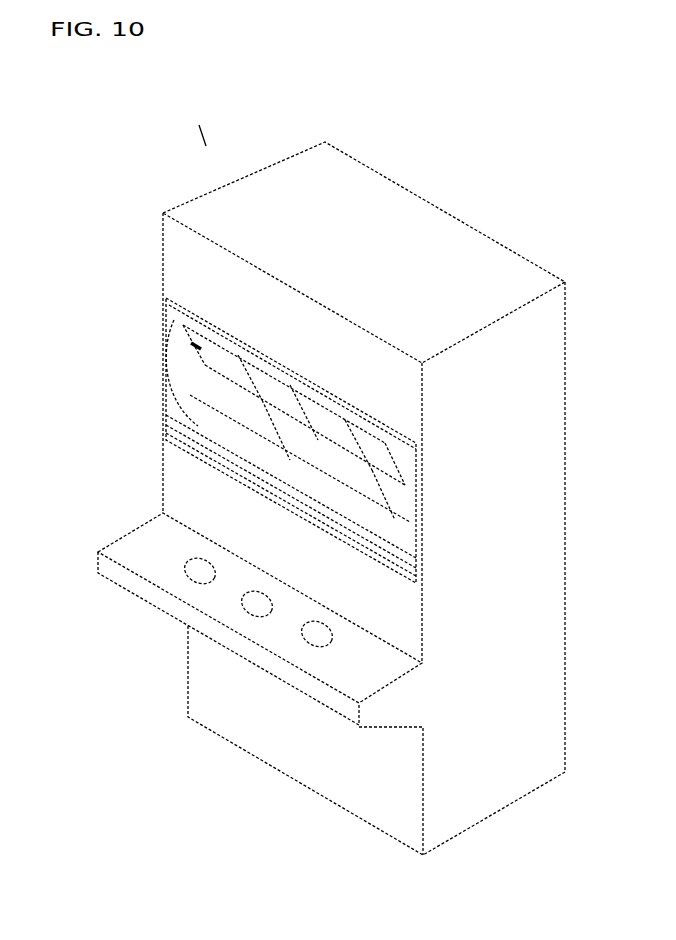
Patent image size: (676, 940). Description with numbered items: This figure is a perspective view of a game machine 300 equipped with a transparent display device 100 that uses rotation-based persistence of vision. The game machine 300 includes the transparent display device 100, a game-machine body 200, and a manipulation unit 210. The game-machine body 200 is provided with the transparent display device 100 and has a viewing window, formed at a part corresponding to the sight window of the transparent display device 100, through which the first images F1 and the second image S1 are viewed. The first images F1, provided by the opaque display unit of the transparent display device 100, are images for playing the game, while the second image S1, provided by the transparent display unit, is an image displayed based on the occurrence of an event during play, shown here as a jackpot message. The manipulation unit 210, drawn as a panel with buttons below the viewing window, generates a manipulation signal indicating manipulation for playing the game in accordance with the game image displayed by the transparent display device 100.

The transparent display device 100 is at (168, 330).
The game-machine body 200 is at (287, 157).
The manipulation unit 210 is at (200, 570).
The game machine 300 is at (200, 127).
The first images F1 is at (165, 378).
The second image S1 is at (200, 470).